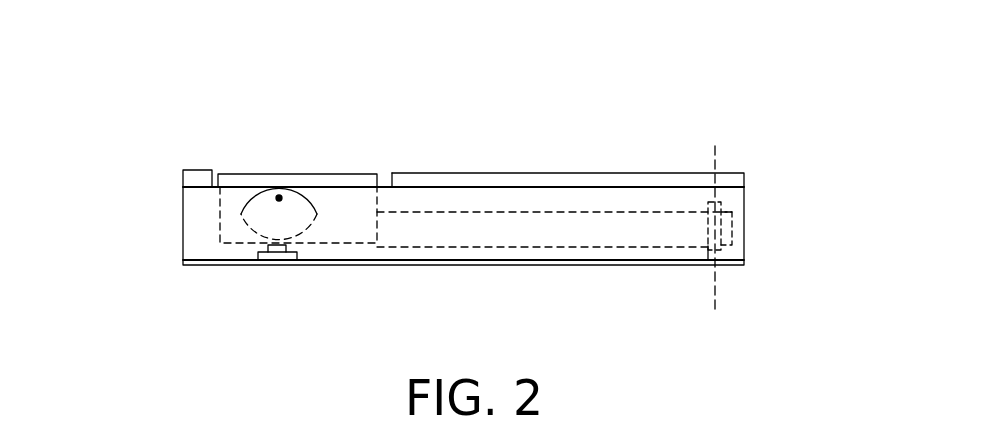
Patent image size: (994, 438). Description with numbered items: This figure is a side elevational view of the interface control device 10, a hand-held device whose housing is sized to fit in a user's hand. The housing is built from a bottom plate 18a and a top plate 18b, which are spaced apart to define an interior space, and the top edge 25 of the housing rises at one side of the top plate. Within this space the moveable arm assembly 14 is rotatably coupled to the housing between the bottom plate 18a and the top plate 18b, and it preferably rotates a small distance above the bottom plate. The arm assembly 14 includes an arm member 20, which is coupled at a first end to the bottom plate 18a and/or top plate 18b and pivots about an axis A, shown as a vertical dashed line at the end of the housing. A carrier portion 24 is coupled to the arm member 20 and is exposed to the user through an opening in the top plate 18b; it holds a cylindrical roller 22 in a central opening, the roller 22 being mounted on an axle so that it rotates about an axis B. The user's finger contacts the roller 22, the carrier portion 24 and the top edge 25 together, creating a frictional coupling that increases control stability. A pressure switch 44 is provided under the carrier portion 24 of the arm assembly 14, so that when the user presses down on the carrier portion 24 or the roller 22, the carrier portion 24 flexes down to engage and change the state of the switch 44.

The interface control device 10 is at (488, 173).
The moveable arm assembly 14 is at (416, 211).
The bottom plate 18a is at (481, 262).
The top plate 18b is at (560, 178).
The arm member 20 is at (628, 237).
The cylindrical roller 22 is at (276, 165).
The carrier portion 24 is at (343, 179).
The top edge 25 is at (197, 172).
The pressure switch 44 is at (263, 259).
The axis A is at (719, 215).
The axis B is at (280, 198).